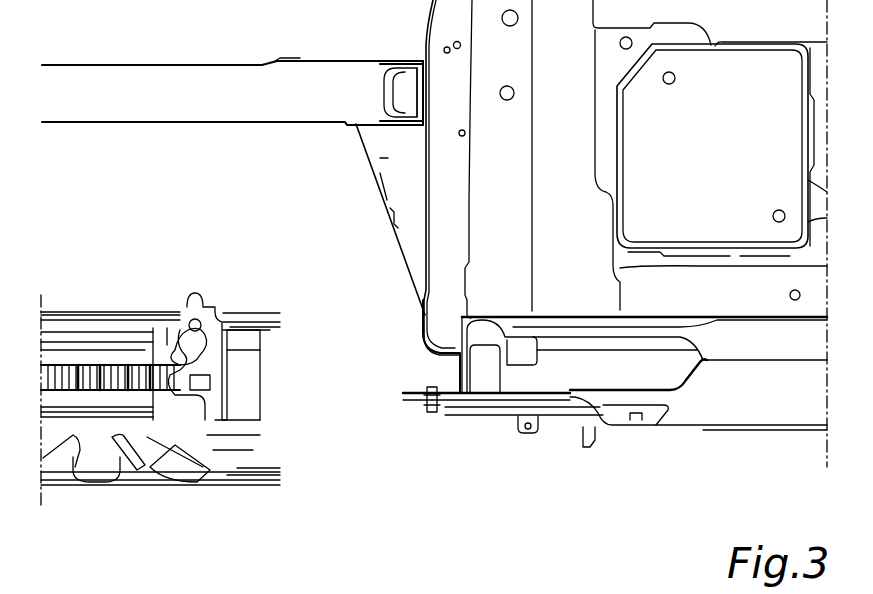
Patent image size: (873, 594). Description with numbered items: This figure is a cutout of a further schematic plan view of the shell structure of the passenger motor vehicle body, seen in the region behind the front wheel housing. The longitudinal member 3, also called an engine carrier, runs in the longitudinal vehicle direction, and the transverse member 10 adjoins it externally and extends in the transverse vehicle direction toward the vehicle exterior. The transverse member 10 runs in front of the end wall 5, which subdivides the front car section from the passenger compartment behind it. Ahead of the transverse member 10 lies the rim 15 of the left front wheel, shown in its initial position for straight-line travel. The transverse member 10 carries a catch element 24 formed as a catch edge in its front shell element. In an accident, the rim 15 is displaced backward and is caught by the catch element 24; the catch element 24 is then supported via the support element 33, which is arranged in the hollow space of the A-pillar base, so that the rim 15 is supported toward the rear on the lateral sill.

The longitudinal member 3 is at (153, 100).
The end wall 5 is at (440, 248).
The transverse member 10 is at (388, 158).
The rim 15 is at (122, 345).
The catch element 24 is at (420, 342).
The support element 33 is at (565, 368).